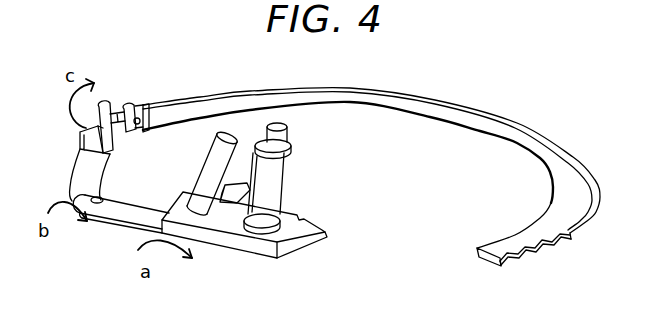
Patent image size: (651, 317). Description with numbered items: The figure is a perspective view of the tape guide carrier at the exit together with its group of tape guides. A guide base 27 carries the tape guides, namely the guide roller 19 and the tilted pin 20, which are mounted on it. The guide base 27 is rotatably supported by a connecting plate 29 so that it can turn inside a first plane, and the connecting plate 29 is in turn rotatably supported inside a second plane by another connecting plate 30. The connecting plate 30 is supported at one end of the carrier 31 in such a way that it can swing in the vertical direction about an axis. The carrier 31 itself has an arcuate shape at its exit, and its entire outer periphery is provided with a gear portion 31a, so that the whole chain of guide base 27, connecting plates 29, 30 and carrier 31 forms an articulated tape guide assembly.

The carrier 31 is at (203, 105).
The gear portion 31a is at (540, 252).
The connecting plate 30 is at (76, 168).
The connecting plate 29 is at (134, 215).
The guide base 27 is at (248, 246).
The tilted pin 20 is at (212, 157).
The guide roller 19 is at (286, 185).